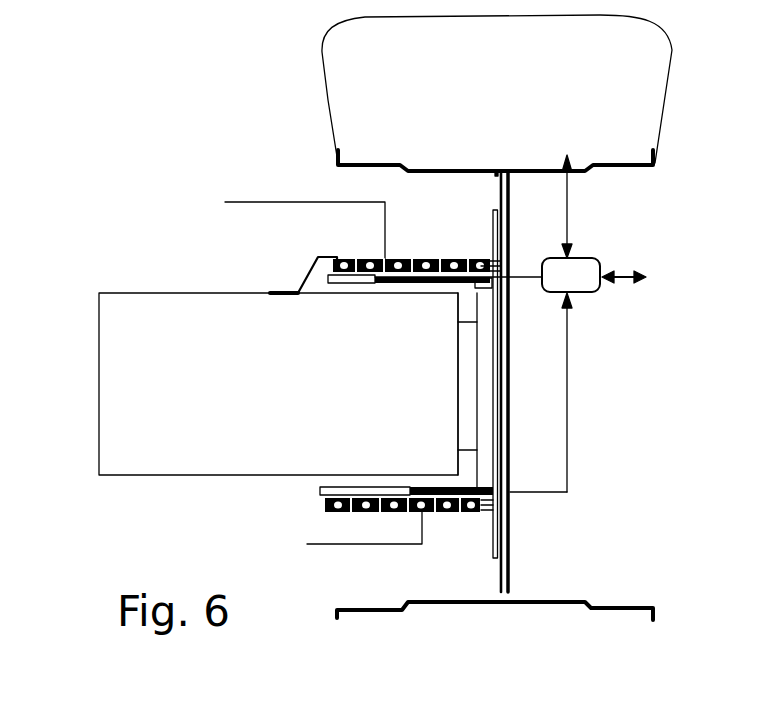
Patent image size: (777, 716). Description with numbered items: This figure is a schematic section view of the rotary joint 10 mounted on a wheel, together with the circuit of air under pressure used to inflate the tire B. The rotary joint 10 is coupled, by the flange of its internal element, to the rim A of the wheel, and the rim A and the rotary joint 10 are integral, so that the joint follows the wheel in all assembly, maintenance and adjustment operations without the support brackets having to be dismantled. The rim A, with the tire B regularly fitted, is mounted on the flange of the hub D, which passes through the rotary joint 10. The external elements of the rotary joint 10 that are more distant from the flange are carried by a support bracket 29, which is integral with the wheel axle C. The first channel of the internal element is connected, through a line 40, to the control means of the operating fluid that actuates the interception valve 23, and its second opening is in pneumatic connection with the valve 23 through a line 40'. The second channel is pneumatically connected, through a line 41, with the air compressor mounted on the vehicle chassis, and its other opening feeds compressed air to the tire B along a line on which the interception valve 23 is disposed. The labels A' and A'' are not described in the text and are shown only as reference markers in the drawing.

The tire B is at (672, 82).
The rim A is at (595, 382).
The guide bar A' is at (524, 364).
The base A'' is at (495, 636).
The wheel axle C is at (120, 362).
The hub D is at (485, 433).
The rotary joint 10 is at (454, 233).
The support bracket 29 is at (308, 274).
The line 40 is at (298, 207).
The line 40' is at (459, 314).
The line 41 is at (573, 212).
The interception valve 23 is at (582, 282).